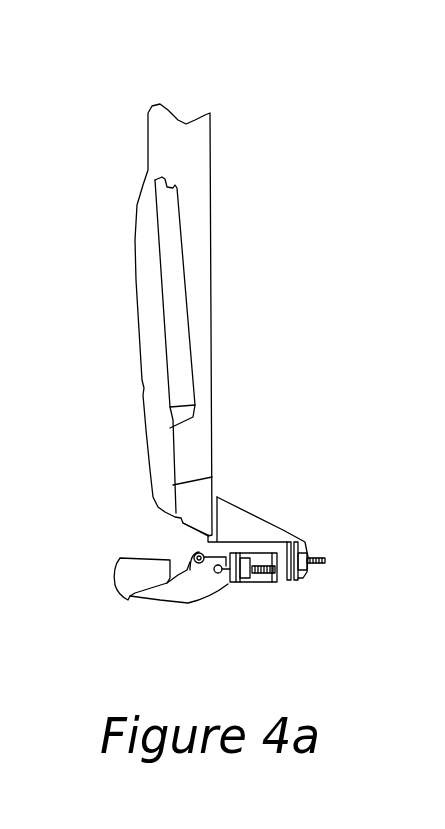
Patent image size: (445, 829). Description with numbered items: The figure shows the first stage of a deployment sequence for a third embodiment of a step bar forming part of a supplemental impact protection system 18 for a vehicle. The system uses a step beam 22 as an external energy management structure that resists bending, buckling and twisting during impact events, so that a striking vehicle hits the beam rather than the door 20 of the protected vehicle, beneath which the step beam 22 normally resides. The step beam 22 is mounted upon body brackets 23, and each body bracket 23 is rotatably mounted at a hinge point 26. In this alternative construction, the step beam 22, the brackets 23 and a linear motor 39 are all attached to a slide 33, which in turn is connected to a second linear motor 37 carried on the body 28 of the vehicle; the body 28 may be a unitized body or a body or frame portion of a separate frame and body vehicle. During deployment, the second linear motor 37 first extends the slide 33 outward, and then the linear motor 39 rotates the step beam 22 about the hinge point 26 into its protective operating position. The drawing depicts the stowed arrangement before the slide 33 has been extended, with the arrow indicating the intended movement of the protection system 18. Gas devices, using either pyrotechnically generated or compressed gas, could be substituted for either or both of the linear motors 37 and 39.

The supplemental impact protection system 18 is at (108, 598).
The door 20 is at (199, 168).
The step beam 22 is at (125, 573).
The body bracket 23 is at (188, 594).
The hinge point 26 is at (197, 549).
The body 28 is at (237, 517).
The slide 33 is at (272, 525).
The second linear motor 37 is at (310, 577).
The linear motor 39 is at (250, 584).